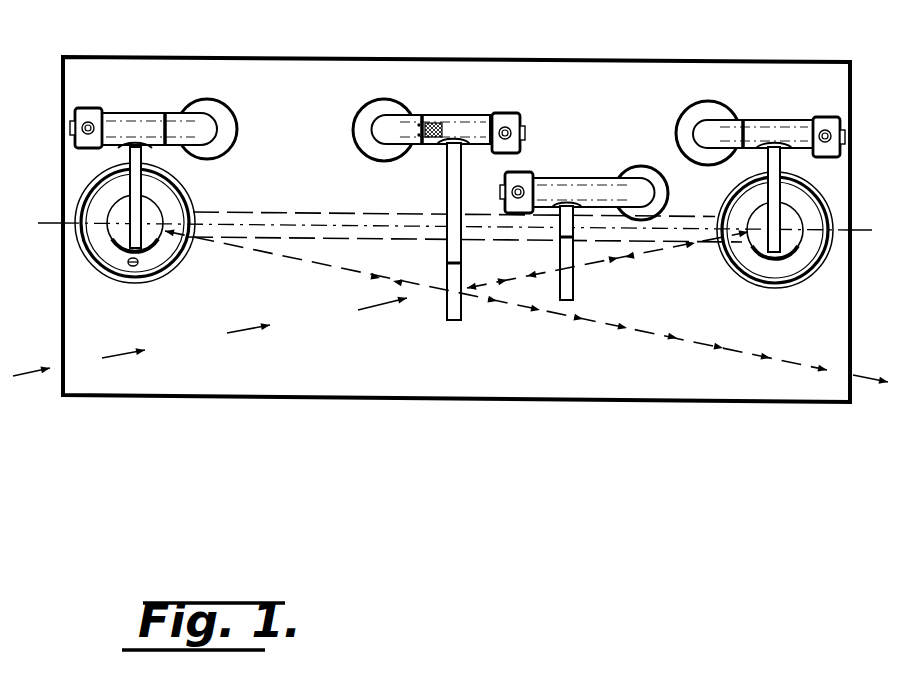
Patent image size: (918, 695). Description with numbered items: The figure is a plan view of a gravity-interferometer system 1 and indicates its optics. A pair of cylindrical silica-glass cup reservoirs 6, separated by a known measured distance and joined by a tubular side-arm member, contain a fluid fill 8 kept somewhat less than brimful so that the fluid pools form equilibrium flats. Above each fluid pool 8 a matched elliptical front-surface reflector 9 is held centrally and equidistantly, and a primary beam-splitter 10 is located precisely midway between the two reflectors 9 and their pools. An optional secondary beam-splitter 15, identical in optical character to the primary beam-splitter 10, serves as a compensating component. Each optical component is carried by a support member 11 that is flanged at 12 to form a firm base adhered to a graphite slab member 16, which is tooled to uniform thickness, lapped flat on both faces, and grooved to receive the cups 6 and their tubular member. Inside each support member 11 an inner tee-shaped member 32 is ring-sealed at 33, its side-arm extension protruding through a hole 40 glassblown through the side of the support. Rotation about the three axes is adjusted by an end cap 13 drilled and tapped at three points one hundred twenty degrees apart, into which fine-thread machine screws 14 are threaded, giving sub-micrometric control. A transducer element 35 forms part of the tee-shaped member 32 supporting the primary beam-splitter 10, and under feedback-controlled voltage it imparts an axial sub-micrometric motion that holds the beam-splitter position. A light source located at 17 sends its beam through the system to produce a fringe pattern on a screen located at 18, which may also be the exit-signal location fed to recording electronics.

The central axis line 1 is at (454, 227).
The silica-glass cup reservoir 6 is at (95, 257).
The fluid fill 8 is at (133, 262).
The elliptical front-surface reflector 9 is at (797, 252).
The primary beam-splitter 10 is at (452, 323).
The support member 11 is at (772, 120).
The flange 12 is at (202, 99).
The end cap 13 is at (513, 113).
The adjustment fine-thread machine screw 14 is at (827, 127).
The secondary beam-splitter 15 is at (567, 302).
The graphite slab member 16 is at (193, 397).
The light source location 17 is at (30, 375).
The screen location 18 is at (855, 377).
The inner tee-shaped member 32 is at (462, 118).
The ring seal 33 is at (165, 115).
The transducer element 35 is at (435, 123).
The hole 40 is at (122, 152).